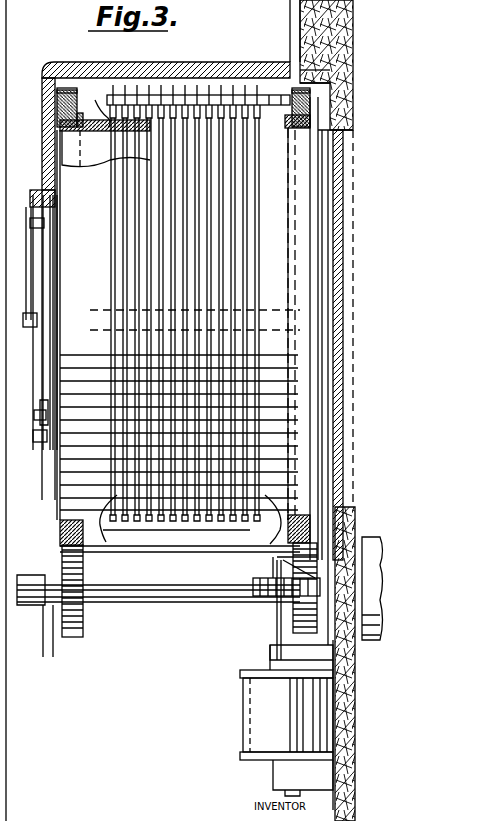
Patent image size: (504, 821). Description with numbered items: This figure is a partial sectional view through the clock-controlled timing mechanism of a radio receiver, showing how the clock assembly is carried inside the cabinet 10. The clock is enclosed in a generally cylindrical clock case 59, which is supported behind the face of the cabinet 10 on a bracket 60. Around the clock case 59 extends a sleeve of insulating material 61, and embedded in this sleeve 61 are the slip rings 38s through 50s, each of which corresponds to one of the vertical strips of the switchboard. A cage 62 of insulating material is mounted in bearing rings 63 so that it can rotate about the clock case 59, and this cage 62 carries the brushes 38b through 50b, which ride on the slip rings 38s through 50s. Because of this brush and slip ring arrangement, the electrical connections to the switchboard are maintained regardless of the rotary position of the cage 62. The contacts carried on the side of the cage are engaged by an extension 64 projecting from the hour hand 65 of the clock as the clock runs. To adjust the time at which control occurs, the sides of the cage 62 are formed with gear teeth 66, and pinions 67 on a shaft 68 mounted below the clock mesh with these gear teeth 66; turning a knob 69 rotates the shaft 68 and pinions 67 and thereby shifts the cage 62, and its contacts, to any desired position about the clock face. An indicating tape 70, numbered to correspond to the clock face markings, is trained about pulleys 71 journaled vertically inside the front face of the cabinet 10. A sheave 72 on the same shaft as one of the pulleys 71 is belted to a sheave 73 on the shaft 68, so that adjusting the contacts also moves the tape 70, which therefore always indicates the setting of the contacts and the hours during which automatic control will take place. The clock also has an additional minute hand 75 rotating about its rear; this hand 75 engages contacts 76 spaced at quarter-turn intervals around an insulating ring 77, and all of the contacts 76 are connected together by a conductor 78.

The cabinet 10 is at (335, 30).
The brush 38b is at (110, 112).
The slip ring 38s is at (180, 562).
The brush 50b is at (275, 78).
The slip ring 50s is at (262, 520).
The clock case 59 is at (74, 147).
The bracket 60 is at (210, 72).
The sleeve of insulating material 61 is at (95, 125).
The cage 62 is at (50, 104).
The bearing rings 63 is at (60, 123).
The extension 64 is at (318, 106).
The hour hand 65 is at (336, 184).
The gear teeth 66 is at (67, 90).
The pinions 67 is at (72, 556).
The shaft 68 is at (152, 597).
The knob 69 is at (355, 664).
The indicating tape 70 is at (250, 712).
The pulleys 71 is at (285, 778).
The sheave 72 is at (268, 594).
The sheave 73 is at (275, 571).
The minute hand 75 is at (28, 268).
The contacts 76 is at (30, 222).
The insulating ring 77 is at (42, 403).
The conductor 78 is at (52, 347).